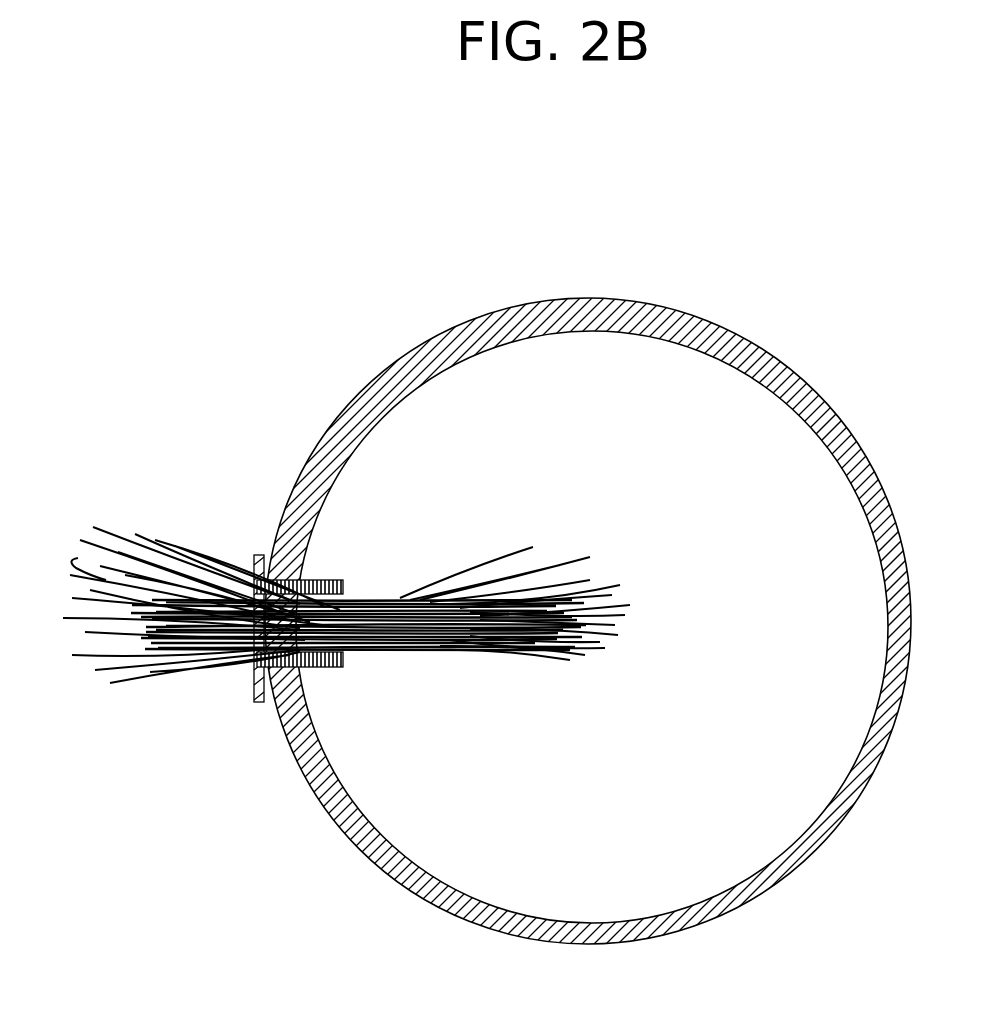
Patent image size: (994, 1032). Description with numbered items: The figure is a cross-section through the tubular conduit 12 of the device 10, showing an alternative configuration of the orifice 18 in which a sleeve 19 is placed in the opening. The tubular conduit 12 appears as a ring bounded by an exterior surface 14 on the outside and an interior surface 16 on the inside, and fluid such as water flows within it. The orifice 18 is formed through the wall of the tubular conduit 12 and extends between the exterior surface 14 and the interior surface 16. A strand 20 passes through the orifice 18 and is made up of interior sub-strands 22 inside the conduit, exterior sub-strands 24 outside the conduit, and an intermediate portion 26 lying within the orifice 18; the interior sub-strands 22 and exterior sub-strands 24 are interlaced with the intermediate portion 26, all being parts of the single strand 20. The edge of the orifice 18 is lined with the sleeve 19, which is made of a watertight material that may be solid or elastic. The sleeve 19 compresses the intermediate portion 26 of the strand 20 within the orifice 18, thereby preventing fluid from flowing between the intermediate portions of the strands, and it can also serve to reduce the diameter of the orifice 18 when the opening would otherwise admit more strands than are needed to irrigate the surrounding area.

The device 10 is at (497, 555).
The tubular conduit 12 is at (522, 335).
The exterior surface 14 is at (372, 372).
The interior surface 16 is at (855, 742).
The orifice 18 is at (316, 672).
The sleeve 19 is at (327, 580).
The strand 20 is at (182, 478).
The interior sub-strands 22 is at (588, 567).
The exterior sub-strands 24 is at (147, 510).
The intermediate portion 26 is at (263, 703).